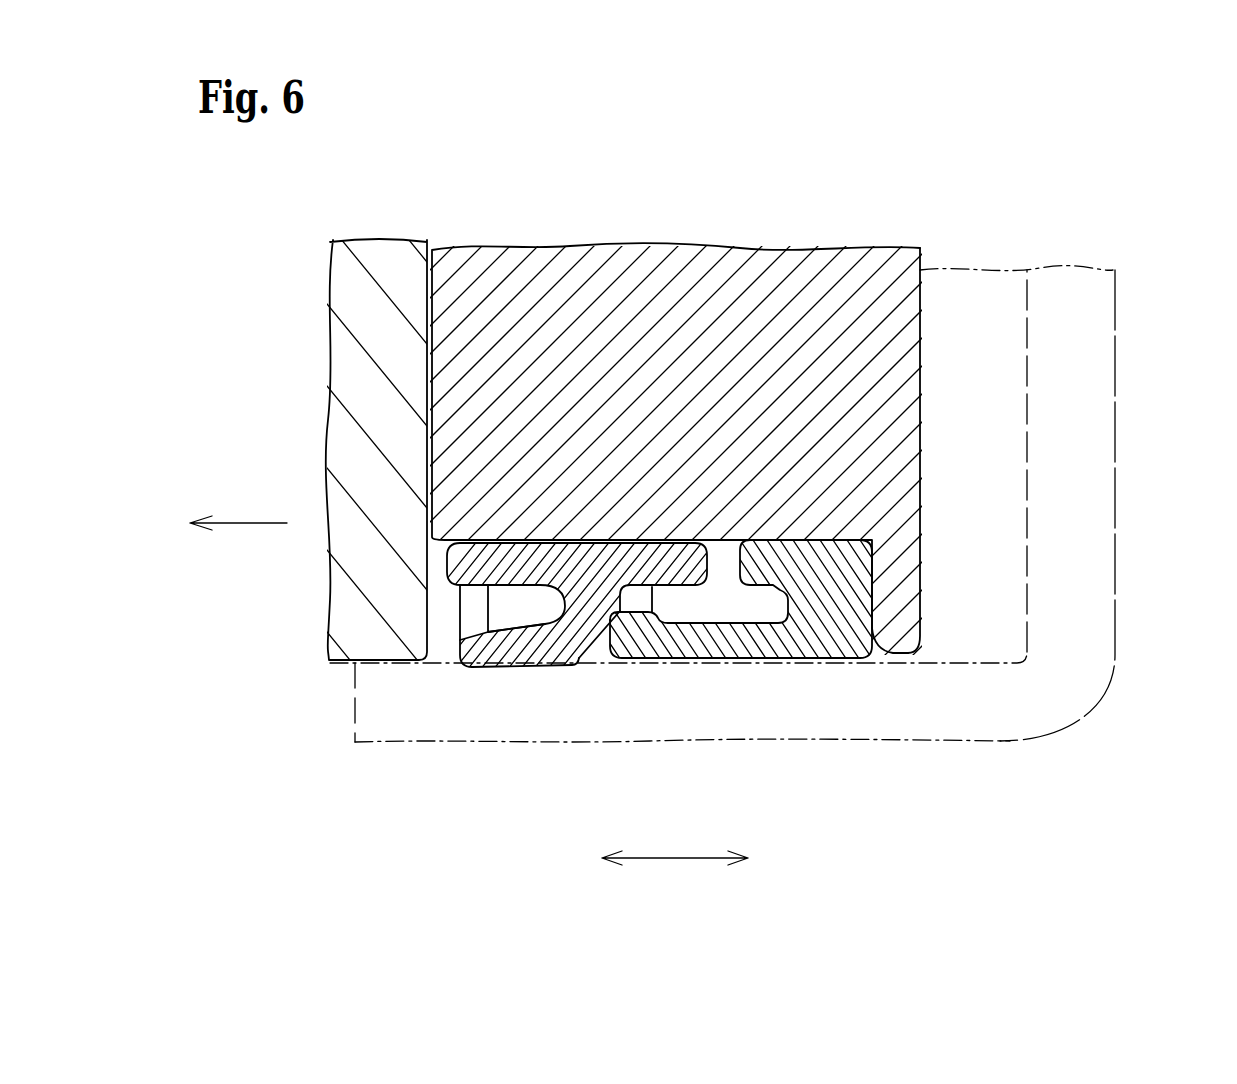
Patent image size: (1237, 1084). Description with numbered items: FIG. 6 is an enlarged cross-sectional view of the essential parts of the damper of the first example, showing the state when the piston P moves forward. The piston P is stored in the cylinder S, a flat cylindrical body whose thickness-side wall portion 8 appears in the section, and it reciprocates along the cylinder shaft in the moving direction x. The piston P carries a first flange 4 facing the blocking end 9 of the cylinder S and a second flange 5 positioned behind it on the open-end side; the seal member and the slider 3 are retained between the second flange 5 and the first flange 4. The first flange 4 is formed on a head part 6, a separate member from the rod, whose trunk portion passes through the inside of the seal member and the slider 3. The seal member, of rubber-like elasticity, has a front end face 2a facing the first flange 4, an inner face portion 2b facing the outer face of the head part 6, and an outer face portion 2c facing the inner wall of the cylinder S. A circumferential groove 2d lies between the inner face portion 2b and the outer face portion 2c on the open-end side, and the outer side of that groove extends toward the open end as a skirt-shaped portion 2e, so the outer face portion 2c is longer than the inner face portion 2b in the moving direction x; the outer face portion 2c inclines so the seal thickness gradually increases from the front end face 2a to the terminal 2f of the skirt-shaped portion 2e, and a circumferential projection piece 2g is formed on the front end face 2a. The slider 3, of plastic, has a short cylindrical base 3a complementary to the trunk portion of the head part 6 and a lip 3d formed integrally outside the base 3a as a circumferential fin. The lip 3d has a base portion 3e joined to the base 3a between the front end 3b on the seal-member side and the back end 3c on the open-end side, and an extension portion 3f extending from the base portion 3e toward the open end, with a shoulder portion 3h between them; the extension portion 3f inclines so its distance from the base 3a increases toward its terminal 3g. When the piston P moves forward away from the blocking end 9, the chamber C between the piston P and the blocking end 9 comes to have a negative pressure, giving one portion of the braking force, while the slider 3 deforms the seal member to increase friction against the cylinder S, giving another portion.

The slider 3 is at (571, 588).
The base 3a is at (632, 383).
The front end 3b is at (717, 562).
The back end 3c is at (447, 562).
The lip 3d is at (562, 663).
The base portion 3e is at (600, 583).
The extension portion 3f is at (533, 665).
The terminal 3g is at (446, 664).
The shoulder portion 3h is at (579, 658).
The front end face 2a is at (880, 565).
The inner face portion 2b is at (812, 540).
The outer face portion 2c is at (770, 660).
The circumferential groove 2d is at (772, 600).
The skirt-shaped portion 2e is at (657, 660).
The terminal 2f is at (605, 660).
The circumferential projection piece 2g is at (888, 648).
The first flange 4 is at (925, 593).
The second flange 5 is at (367, 408).
The head part 6 is at (925, 612).
The thickness-side wall portion 8 is at (479, 742).
The blocking end 9 is at (1100, 452).
The piston P is at (920, 338).
The chamber C is at (997, 425).
The cylinder S is at (1100, 510).
The moving direction x is at (683, 858).